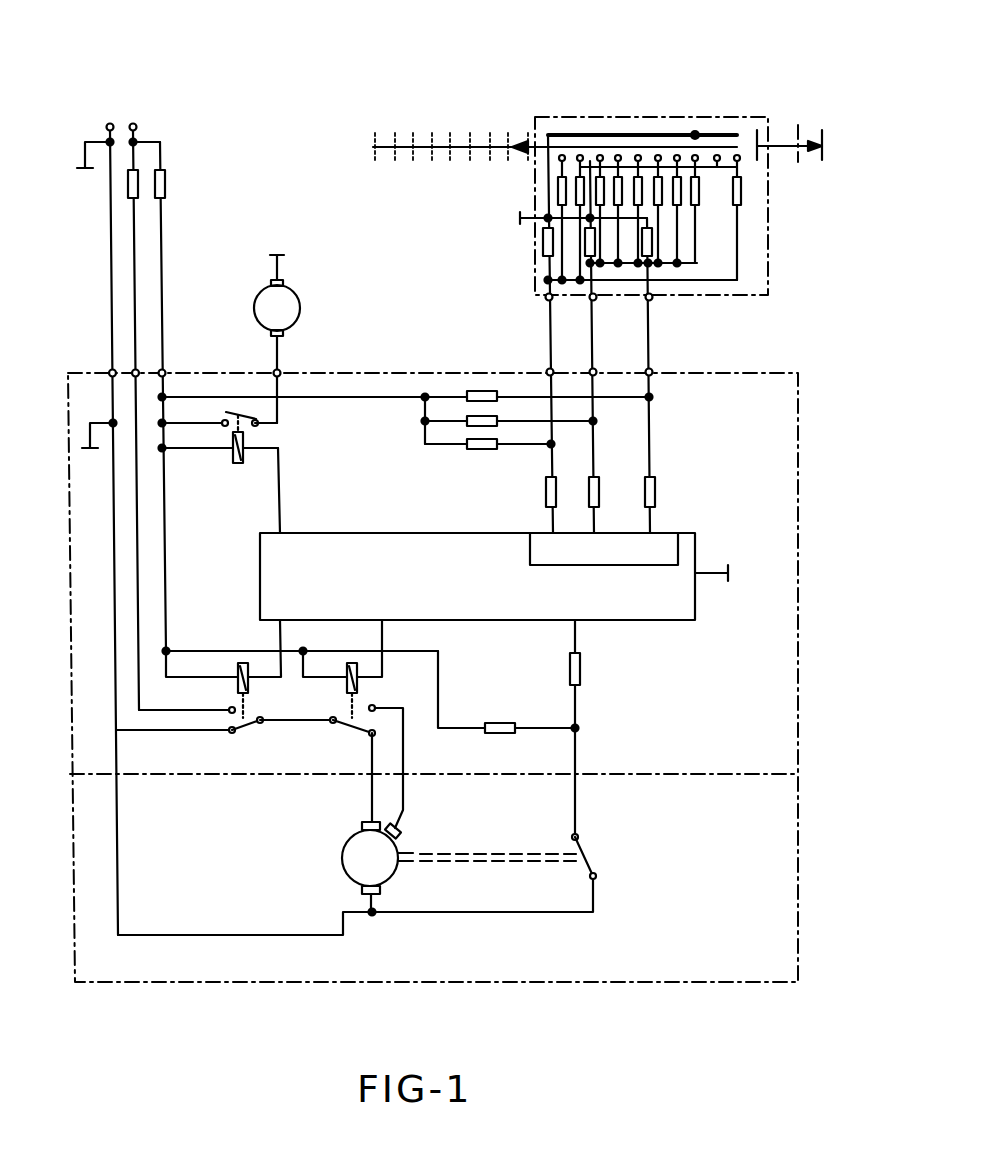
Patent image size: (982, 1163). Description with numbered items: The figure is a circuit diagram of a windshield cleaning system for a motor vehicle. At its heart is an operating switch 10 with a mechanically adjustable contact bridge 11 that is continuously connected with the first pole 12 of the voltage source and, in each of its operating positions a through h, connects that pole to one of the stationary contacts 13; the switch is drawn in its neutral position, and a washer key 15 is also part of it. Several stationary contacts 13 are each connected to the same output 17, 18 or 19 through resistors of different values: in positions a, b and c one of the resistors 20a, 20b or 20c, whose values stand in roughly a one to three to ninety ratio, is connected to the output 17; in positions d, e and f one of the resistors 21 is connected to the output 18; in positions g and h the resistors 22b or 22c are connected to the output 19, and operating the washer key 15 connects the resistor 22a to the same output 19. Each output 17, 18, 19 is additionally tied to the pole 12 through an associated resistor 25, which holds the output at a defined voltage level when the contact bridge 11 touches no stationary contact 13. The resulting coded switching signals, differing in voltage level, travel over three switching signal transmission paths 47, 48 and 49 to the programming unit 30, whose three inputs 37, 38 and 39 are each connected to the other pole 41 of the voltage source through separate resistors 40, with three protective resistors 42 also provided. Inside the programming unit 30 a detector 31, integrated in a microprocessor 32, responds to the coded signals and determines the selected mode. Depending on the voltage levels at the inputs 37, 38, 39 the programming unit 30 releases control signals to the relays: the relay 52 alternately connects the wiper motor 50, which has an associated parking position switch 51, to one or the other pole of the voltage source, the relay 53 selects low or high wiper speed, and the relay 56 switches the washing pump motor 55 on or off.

The operating switch 10 is at (765, 270).
The contact bridge 11 is at (715, 136).
The first pole of a voltage source 12 is at (114, 123).
The stationary contacts 13 is at (545, 164).
The washer key 15 is at (792, 168).
The output 17 is at (652, 299).
The output 18 is at (596, 300).
The output 19 is at (545, 298).
The resistor 20a is at (695, 174).
The resistor 20b is at (678, 172).
The resistor 20c is at (655, 172).
The resistors 21 is at (590, 133).
The resistor 22a is at (742, 195).
The resistor 22b is at (580, 175).
The resistor 22c is at (557, 193).
The associated resistor 25 is at (585, 257).
The programming unit 30 is at (782, 457).
The detector 31 is at (612, 562).
The microprocessor 32 is at (690, 608).
The input 37 is at (653, 372).
The input 38 is at (590, 371).
The input 39 is at (547, 372).
The resistors 40 is at (468, 392).
The other pole of the voltage source 41 is at (136, 124).
The protective resistors 42 is at (545, 497).
The switching signal transmission path 47 is at (652, 338).
The switching signal transmission path 48 is at (594, 341).
The switching signal transmission path 49 is at (550, 347).
The wiper motor 50 is at (400, 848).
The parking position switch 51 is at (590, 856).
The relay 52 is at (238, 668).
The relay 53 is at (358, 680).
The washing pump motor 55 is at (254, 310).
The relay 56 is at (247, 433).